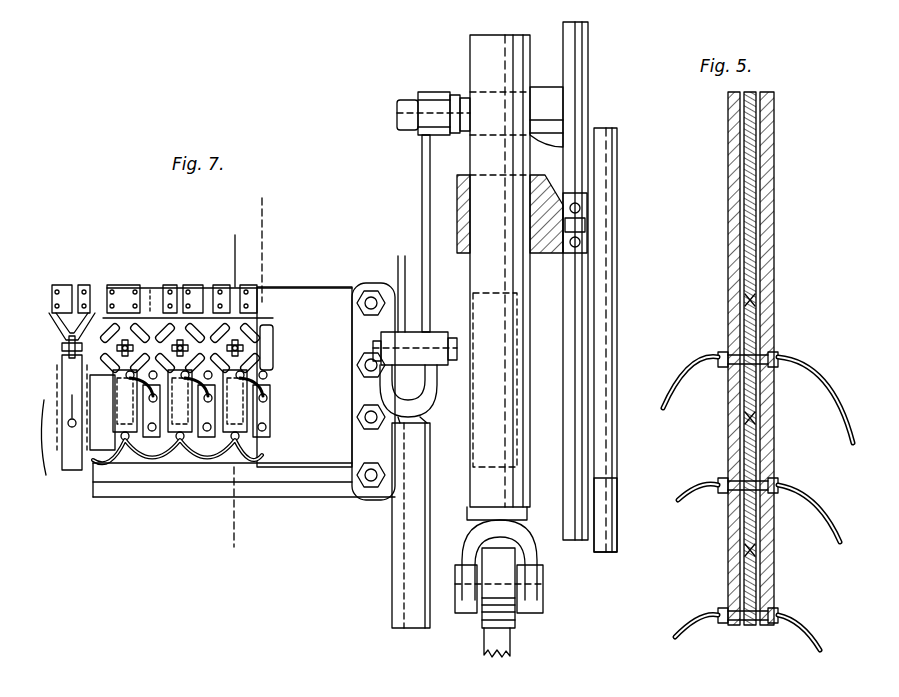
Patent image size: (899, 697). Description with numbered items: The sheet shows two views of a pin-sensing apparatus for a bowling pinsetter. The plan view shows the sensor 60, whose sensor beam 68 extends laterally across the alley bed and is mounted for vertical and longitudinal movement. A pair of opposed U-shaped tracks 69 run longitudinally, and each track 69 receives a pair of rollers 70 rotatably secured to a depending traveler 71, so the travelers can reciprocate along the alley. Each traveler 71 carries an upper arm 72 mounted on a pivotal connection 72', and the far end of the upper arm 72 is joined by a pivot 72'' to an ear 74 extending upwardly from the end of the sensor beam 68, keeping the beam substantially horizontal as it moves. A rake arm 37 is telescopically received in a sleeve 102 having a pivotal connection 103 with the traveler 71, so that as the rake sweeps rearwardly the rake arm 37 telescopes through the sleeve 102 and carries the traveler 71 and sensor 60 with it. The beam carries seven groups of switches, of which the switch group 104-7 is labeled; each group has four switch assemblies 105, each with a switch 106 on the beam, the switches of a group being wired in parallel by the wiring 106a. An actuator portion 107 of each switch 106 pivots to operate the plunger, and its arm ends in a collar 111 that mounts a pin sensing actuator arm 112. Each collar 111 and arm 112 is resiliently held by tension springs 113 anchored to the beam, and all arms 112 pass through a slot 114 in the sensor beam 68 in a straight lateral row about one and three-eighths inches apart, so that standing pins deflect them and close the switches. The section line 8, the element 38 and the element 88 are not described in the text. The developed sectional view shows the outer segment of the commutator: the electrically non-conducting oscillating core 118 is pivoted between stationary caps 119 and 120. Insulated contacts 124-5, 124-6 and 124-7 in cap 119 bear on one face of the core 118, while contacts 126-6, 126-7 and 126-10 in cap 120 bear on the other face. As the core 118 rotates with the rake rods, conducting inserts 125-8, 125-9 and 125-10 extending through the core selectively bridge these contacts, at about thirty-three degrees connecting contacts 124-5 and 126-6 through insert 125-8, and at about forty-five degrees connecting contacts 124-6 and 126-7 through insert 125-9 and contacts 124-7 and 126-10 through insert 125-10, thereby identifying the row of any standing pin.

In FIG. 7, the section line 8- 8 is at (253, 260).
In FIG. 7, the rake arm 37 is at (483, 63).
In FIG. 7, the piston rod clevis 38 is at (514, 625).
In FIG. 7, the sensor 60 is at (298, 288).
In FIG. 7, the sensor beam 68 is at (308, 300).
In FIG. 7, the track 69 is at (608, 184).
In FIG. 7, the roller 70 is at (610, 491).
In FIG. 7, the traveler 71 is at (578, 72).
In FIG. 7, the upper arm 72 is at (406, 233).
In FIG. 7, the pivotal connection 72' is at (452, 98).
In FIG. 7, the pivot 72'' is at (408, 340).
In FIG. 7, the ear 74 is at (397, 284).
In FIG. 7, the bar 88 is at (404, 554).
In FIG. 7, the sleeve 102 is at (541, 270).
In FIG. 7, the pivotal connection 103 is at (580, 232).
In FIG. 7, the switch group 104-7 is at (178, 462).
In FIG. 7, the switch assembly 105 is at (157, 444).
In FIG. 7, the switch 106 is at (62, 445).
In FIG. 7, the wiring 106a is at (168, 448).
In FIG. 7, the actuator portion 107 is at (82, 480).
In FIG. 7, the collar 111 is at (247, 361).
In FIG. 7, the pin sensing actuator arm 112 is at (75, 286).
In FIG. 7, the tension spring 113 is at (104, 330).
In FIG. 7, the slot 114 is at (263, 345).
In FIG. 5, the oscillating core 118 is at (749, 625).
In FIG. 5, the stationary cap 119 is at (740, 625).
In FIG. 5, the stationary cap 120 is at (764, 625).
In FIG. 5, the contact 124-5 is at (708, 628).
In FIG. 5, the contact 124-6 is at (706, 492).
In FIG. 5, the contact 124-7 is at (710, 368).
In FIG. 5, the electrically conducting insert 125-8 is at (753, 550).
In FIG. 5, the electrically conducting insert 125-9 is at (753, 420).
In FIG. 5, the electrically conducting insert 125-10 is at (753, 300).
In FIG. 5, the contact 126-6 is at (780, 612).
In FIG. 5, the contact 126-7 is at (780, 487).
In FIG. 5, the contact 126-10 is at (778, 356).